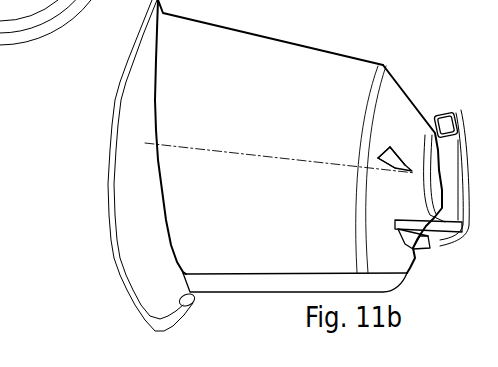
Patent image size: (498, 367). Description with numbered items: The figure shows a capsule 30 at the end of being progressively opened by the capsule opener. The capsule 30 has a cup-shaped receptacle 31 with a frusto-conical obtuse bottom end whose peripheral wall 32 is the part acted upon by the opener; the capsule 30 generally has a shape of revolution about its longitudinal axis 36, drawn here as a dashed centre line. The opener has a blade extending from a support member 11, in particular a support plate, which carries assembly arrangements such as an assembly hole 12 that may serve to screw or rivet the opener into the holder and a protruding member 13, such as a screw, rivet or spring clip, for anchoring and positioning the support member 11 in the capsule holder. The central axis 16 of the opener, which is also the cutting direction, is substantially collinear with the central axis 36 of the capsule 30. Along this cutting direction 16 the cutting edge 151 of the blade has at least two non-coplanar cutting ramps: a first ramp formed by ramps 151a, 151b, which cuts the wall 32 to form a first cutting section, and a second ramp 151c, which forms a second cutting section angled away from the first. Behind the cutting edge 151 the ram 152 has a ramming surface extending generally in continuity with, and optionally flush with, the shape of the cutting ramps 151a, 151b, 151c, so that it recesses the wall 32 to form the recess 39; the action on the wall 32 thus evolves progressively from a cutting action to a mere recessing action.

The support member 11 is at (460, 135).
The assembly hole 12 is at (461, 174).
The protruding member 13 is at (442, 113).
The central axis 16 is at (250, 152).
The capsule 30 is at (84, 254).
The receptacle 31 is at (267, 40).
The peripheral wall 32 is at (412, 90).
The longitudinal axis 36 is at (250, 152).
The recess 39 is at (412, 246).
The cutting edge 151 is at (395, 226).
The first cutting ramp 151a is at (383, 154).
The first cutting ramp 151b is at (378, 159).
The second cutting ramp 151c is at (390, 147).
The ram 152 is at (418, 250).